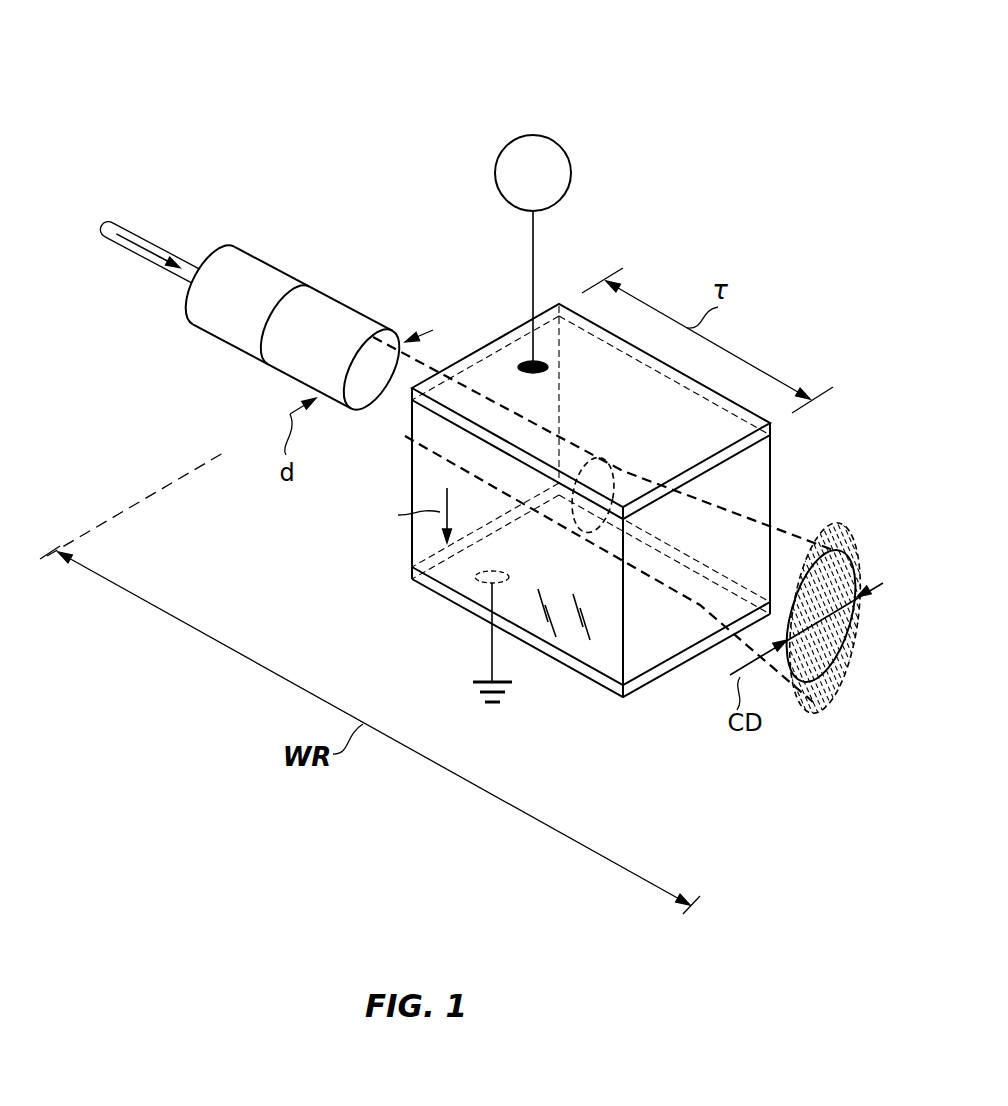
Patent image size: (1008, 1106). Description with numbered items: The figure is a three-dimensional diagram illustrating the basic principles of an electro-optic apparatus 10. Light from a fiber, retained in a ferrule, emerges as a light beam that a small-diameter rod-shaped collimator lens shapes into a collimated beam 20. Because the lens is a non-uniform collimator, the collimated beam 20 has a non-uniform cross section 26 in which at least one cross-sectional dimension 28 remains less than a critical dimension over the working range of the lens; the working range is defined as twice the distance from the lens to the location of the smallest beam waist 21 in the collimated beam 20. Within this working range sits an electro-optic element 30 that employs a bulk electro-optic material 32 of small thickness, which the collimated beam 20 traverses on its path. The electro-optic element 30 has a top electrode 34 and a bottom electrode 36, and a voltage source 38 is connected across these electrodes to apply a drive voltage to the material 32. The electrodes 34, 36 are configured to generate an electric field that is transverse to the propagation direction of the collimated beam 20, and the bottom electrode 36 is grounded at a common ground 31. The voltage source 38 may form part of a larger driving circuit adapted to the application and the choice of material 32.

The electro-optic apparatus 10 is at (333, 74).
The collimated beam 20 is at (430, 363).
The smallest beam waist 21 is at (600, 457).
The non-uniform cross section 26 is at (853, 523).
The cross-sectional dimension 28 is at (843, 587).
The electro-optic element 30 is at (541, 529).
The ground 31 is at (492, 660).
The bulk electro-optic material 32 is at (413, 492).
The top electrode 34 is at (771, 425).
The bottom electrode 36 is at (640, 683).
The voltage source 38 is at (495, 175).